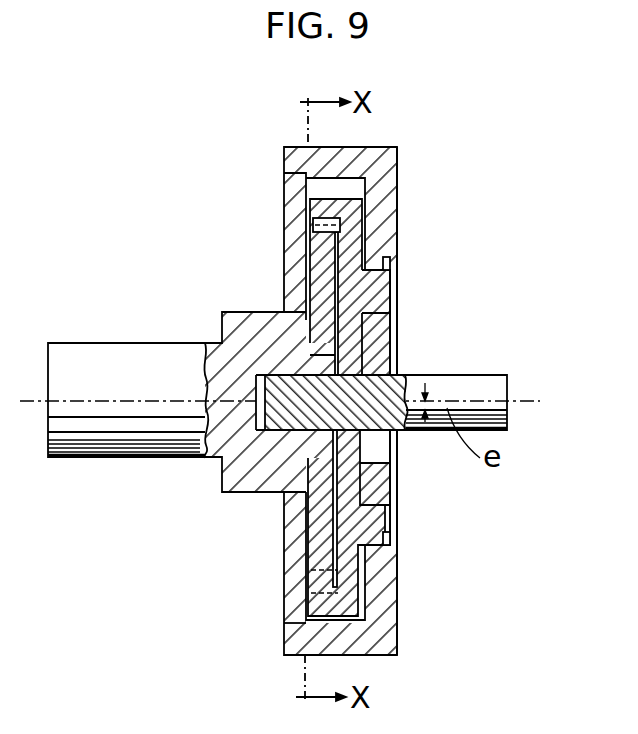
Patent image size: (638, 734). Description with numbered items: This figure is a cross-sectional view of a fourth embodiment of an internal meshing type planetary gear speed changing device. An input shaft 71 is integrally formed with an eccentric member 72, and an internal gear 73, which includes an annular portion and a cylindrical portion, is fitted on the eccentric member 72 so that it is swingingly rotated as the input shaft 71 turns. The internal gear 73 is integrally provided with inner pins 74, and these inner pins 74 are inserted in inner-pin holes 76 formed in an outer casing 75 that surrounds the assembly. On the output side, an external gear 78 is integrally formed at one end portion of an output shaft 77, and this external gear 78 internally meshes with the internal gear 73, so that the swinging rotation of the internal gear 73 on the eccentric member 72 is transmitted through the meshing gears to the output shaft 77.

The input shaft 71 is at (478, 387).
The eccentric member 72 is at (353, 440).
The internal gear 73 is at (357, 218).
The inner pins 74 is at (384, 292).
The outer casing 75 is at (386, 160).
The inner-pin holes 76 is at (392, 248).
The output shaft 77 is at (83, 443).
The external gear 78 is at (318, 522).